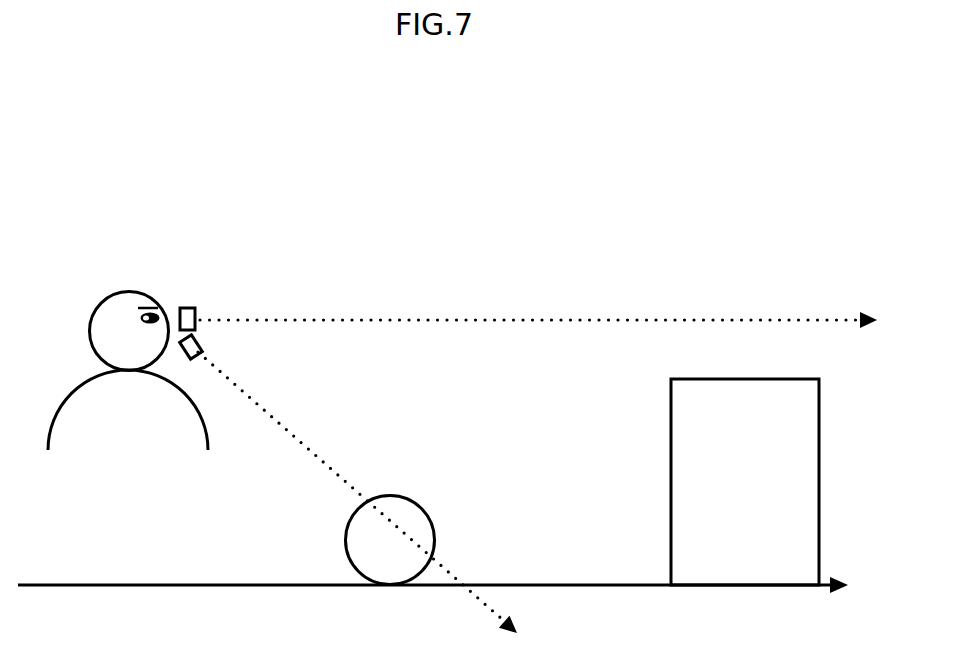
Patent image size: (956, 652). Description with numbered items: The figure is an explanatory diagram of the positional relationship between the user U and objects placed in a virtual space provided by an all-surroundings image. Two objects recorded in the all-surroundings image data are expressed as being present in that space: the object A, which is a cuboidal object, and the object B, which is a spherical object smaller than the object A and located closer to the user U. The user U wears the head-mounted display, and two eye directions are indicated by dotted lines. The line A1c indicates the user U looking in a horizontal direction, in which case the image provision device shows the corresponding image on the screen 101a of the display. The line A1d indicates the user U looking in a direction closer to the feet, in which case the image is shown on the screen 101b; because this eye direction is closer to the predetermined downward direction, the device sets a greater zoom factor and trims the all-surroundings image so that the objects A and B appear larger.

The user U is at (105, 300).
The screen 101a is at (187, 308).
The screen 101b is at (204, 340).
The line A1c is at (550, 320).
The line A1d is at (323, 462).
The object B is at (418, 505).
The object A is at (819, 460).